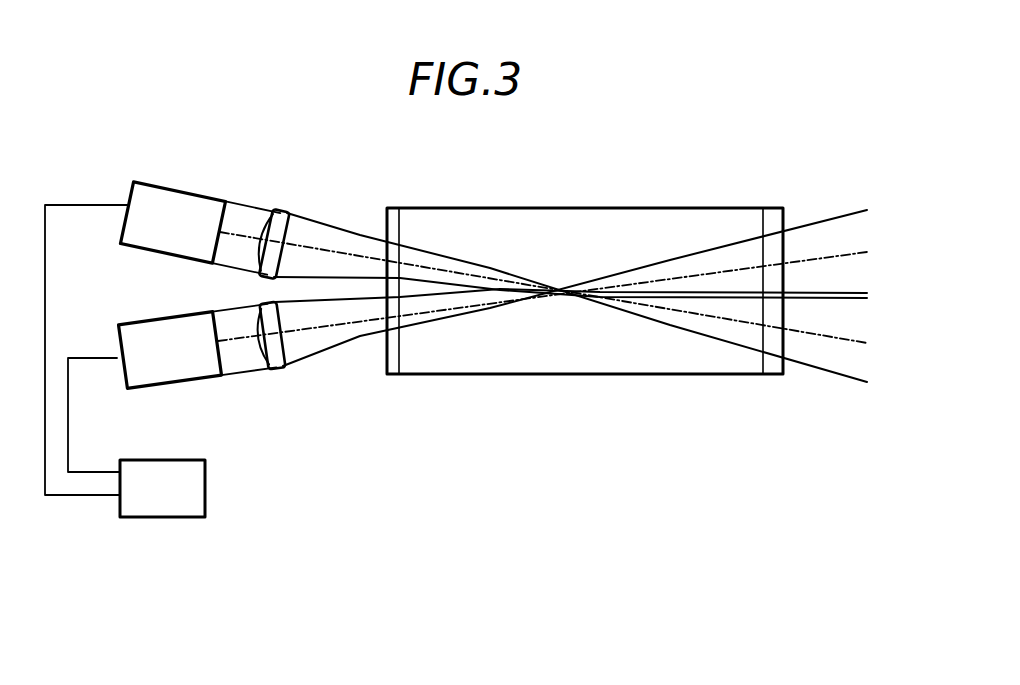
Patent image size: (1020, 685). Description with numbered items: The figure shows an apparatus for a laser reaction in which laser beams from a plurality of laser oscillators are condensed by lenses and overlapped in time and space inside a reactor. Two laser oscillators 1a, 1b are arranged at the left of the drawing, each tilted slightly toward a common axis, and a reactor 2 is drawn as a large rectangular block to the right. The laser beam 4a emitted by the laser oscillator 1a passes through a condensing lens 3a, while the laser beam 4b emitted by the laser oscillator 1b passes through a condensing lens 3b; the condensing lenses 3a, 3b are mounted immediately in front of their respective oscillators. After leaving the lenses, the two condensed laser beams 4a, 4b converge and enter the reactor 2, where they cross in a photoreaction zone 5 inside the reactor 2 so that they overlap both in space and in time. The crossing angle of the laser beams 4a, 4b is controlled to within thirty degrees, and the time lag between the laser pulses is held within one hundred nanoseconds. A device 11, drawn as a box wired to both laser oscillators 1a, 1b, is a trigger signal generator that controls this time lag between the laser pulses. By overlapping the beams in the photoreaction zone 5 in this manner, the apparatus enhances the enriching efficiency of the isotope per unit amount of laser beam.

The laser oscillator 1a is at (153, 183).
The laser oscillator 1b is at (197, 386).
The reactor 2 is at (477, 208).
The condensing lens 3a is at (275, 207).
The condensing lens 3b is at (275, 367).
The laser beam 4a is at (318, 223).
The laser beam 4b is at (320, 345).
The photoreaction zone 5 is at (565, 303).
The trigger signal generator 11 is at (167, 518).